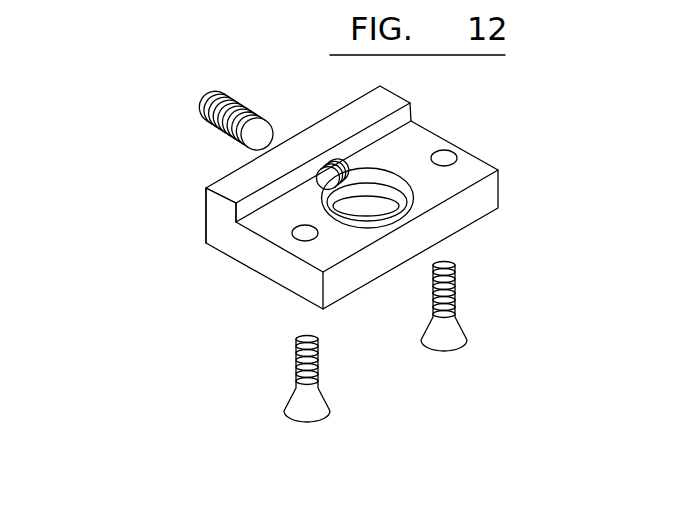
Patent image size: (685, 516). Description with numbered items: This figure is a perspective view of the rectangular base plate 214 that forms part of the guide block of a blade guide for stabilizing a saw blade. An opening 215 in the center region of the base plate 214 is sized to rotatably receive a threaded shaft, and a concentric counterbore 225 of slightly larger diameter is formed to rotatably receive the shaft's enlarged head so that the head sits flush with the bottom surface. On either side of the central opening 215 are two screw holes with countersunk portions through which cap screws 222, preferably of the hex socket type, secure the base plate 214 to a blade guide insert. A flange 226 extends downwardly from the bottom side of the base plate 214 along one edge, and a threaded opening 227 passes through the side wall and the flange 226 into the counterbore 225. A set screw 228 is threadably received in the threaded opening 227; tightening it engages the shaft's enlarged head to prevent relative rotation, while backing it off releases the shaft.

The base plate 214 is at (463, 170).
The opening 215 is at (374, 212).
The cap screws 222 is at (312, 410).
The counterbore 225 is at (382, 172).
The flange 226 is at (217, 222).
The threaded opening 227 is at (318, 177).
The set screw 228 is at (200, 95).